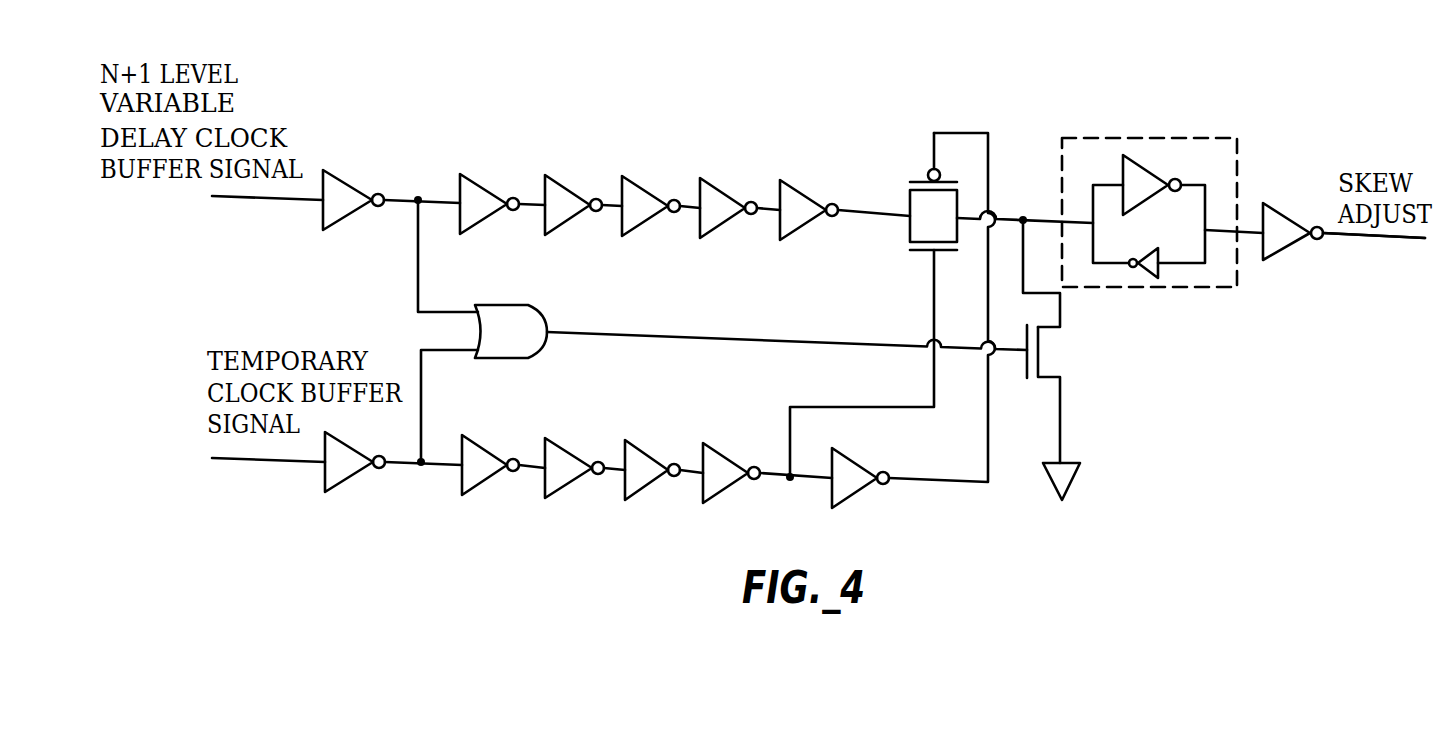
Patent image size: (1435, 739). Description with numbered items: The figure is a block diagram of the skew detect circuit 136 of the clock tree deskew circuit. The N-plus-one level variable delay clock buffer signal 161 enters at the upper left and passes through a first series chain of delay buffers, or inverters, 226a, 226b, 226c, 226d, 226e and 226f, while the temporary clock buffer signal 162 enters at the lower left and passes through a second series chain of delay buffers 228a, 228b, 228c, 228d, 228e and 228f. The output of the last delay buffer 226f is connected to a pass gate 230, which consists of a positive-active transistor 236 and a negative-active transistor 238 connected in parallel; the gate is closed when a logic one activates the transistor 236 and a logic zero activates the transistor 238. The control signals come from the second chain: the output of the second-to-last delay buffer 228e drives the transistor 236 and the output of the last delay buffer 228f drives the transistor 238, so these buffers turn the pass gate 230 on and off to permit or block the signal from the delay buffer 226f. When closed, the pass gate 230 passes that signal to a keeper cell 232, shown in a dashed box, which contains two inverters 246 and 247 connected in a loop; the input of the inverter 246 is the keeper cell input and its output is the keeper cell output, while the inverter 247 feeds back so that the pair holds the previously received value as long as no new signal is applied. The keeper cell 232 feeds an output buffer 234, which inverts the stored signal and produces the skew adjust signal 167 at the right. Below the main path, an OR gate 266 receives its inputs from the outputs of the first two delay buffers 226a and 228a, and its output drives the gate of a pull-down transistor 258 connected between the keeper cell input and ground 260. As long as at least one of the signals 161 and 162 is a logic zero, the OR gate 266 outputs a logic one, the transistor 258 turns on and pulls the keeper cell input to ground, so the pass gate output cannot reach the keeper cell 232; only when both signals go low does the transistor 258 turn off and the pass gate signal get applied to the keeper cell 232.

The clock skew adjust circuit 136 is at (449, 84).
The variable delay clock buffer signal 161 is at (232, 198).
The temporary clock buffer signal 162 is at (232, 460).
The skew adjust signal 167 is at (1343, 238).
The delay buffer 226a is at (345, 182).
The delay buffer 226b is at (478, 186).
The delay buffer 226c is at (558, 225).
The delay buffer 226d is at (640, 186).
The delay buffer 226e is at (718, 233).
The delay buffer 226f is at (795, 191).
The delay buffer 228a is at (345, 485).
The delay buffer 228b is at (480, 447).
The delay buffer 228c is at (563, 490).
The delay buffer 228d is at (643, 452).
The delay buffer 228e is at (720, 495).
The delay buffer 228f is at (848, 462).
The pass gate 230 is at (903, 232).
The keeper cell 232 is at (1103, 126).
The output buffer 234 is at (1283, 256).
The positive-active transistor 236 is at (920, 253).
The negative-active transistor 238 is at (918, 180).
The inverter 246 is at (1147, 172).
The inverter 247 is at (1142, 278).
The pull-down transistor 258 is at (1055, 388).
The ground 260 is at (1075, 480).
The OR gate 266 is at (497, 305).